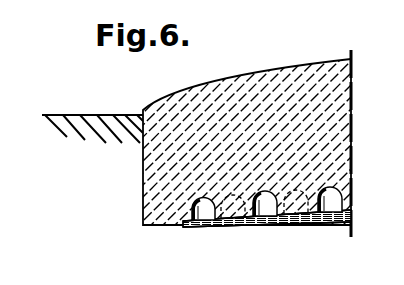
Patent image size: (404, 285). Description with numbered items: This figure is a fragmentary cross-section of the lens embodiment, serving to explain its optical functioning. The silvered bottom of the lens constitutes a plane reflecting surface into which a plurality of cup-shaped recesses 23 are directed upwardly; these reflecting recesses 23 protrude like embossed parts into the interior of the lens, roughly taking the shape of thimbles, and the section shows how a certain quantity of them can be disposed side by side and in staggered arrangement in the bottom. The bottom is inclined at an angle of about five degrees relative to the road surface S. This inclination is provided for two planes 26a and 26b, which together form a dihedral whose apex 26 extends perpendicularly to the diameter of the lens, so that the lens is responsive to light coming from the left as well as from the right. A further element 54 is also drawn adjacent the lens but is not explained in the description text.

The reference plane / table surface 54 is at (403, 90).
The surface S is at (82, 122).
The projections (asperities) 23 is at (258, 219).
The film layer 26 is at (346, 211).
The lower surface of film layer 26a is at (330, 220).
The upper surface of film layer 26b is at (388, 215).